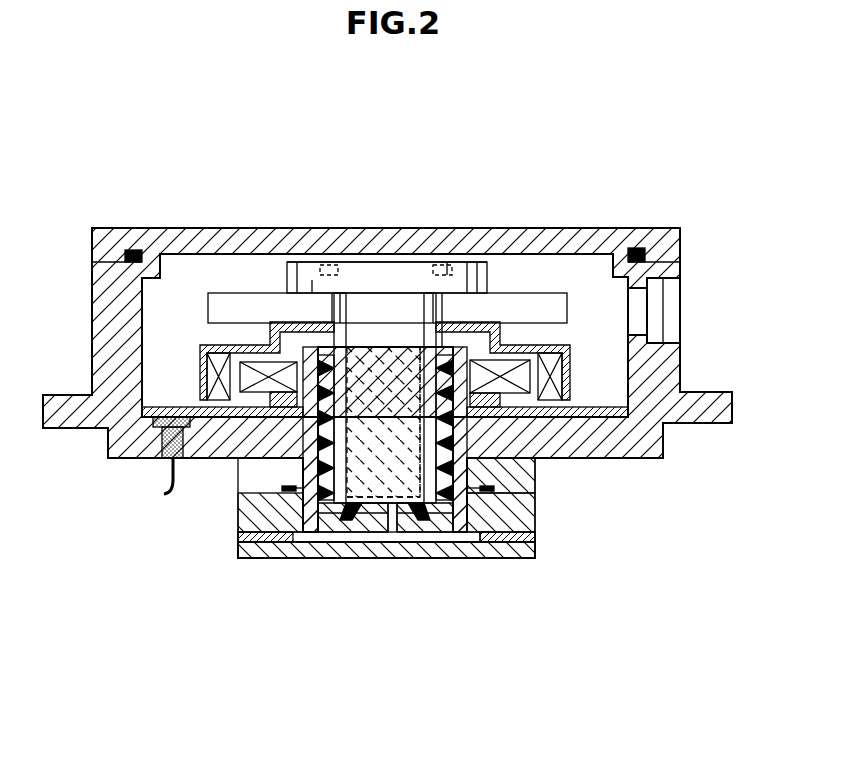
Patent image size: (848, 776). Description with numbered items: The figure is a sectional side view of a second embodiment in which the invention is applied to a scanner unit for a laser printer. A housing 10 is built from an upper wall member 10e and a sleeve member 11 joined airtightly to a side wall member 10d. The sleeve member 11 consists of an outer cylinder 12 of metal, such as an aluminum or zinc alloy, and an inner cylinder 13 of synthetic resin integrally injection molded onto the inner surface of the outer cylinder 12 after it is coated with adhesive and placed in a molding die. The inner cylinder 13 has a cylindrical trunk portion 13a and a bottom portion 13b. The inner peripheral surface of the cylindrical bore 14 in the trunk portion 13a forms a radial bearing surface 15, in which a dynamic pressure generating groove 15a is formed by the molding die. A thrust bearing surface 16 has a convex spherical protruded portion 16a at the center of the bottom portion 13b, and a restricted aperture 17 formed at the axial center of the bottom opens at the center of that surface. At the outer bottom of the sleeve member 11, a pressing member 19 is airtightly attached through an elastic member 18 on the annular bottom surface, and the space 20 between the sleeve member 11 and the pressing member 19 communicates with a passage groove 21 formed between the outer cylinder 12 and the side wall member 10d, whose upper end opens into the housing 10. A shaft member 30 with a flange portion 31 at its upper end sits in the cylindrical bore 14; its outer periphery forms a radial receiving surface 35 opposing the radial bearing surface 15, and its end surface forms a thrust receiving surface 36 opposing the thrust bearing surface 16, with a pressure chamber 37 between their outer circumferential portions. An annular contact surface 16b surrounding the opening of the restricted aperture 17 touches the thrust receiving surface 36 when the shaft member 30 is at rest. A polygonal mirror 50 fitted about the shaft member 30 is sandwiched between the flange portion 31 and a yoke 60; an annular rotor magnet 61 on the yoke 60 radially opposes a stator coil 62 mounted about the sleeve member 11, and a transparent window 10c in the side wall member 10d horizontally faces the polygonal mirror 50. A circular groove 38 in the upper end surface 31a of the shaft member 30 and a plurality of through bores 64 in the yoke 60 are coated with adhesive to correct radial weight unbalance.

The housing 10 is at (172, 227).
The upper wall member 10e is at (237, 240).
The window 10c is at (655, 315).
The side wall member 10d is at (668, 375).
The sleeve member 11 is at (613, 482).
The outer cylinder 12 is at (538, 478).
The inner cylinder 13 is at (538, 518).
The trunk portion 13a is at (443, 372).
The bottom portion 13b is at (311, 558).
The cylindrical bore 14 is at (437, 412).
The radial bearing surface 15 is at (240, 458).
The dynamic pressure generating groove 15a is at (243, 545).
The thrust bearing surface 16 is at (433, 560).
The protruded portion 16a is at (380, 534).
The annular contact surface 16b is at (404, 560).
The restricted aperture 17 is at (387, 507).
The elastic member 18 is at (513, 560).
The pressing member 19 is at (530, 552).
The space 20 is at (472, 560).
The passage groove 21 is at (248, 507).
The shaft member 30 is at (370, 333).
The flange portion 31 is at (378, 273).
The upper end surface 31a is at (413, 261).
The radial receiving surface 35 is at (336, 386).
The thrust receiving surface 36 is at (336, 527).
The pressure chamber 37 is at (378, 500).
The circular groove 38 is at (441, 270).
The polygonal mirror 50 is at (217, 303).
The yoke 60 is at (205, 347).
The rotor magnet 61 is at (203, 370).
The stator coil 62 is at (247, 376).
The through bores 64 is at (284, 323).